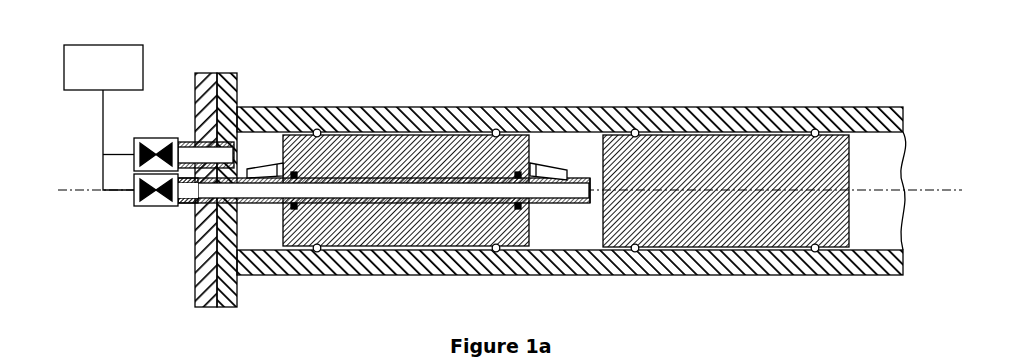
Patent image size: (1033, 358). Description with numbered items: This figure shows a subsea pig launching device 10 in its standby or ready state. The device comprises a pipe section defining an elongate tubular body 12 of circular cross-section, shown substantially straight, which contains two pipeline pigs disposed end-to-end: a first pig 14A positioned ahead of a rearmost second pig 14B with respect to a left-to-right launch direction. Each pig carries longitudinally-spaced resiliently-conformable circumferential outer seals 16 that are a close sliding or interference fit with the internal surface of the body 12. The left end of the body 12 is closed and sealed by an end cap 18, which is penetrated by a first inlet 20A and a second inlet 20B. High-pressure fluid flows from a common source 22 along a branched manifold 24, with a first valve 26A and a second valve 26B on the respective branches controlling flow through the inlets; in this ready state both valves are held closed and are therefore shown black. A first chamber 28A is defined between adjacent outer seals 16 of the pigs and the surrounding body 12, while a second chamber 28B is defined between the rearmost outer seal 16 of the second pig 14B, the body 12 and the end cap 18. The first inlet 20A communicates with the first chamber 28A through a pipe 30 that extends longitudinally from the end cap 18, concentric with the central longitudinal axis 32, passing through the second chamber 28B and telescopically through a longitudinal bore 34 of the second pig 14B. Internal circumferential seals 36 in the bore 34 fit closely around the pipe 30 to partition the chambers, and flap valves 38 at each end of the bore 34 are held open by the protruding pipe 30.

The subsea pig launching device 10 is at (747, 72).
The elongate tubular body 12 is at (452, 108).
The first pig 14A is at (746, 180).
The second pig 14B is at (426, 163).
The circumferential outer seals 16 is at (318, 130).
The end cap 18 is at (194, 291).
The first inlet 20A is at (202, 192).
The second inlet 20B is at (210, 153).
The common source 22 is at (103, 57).
The branched manifold 24 is at (103, 163).
The first valve 26A is at (146, 205).
The second valve 26B is at (158, 140).
The first chamber 28A is at (584, 234).
The second chamber 28B is at (269, 234).
The pipe 30 is at (572, 185).
The central longitudinal axis 32 is at (72, 192).
The longitudinal bore 34 is at (388, 205).
The internal circumferential seals 36 is at (295, 208).
The flap valves 38 is at (268, 168).